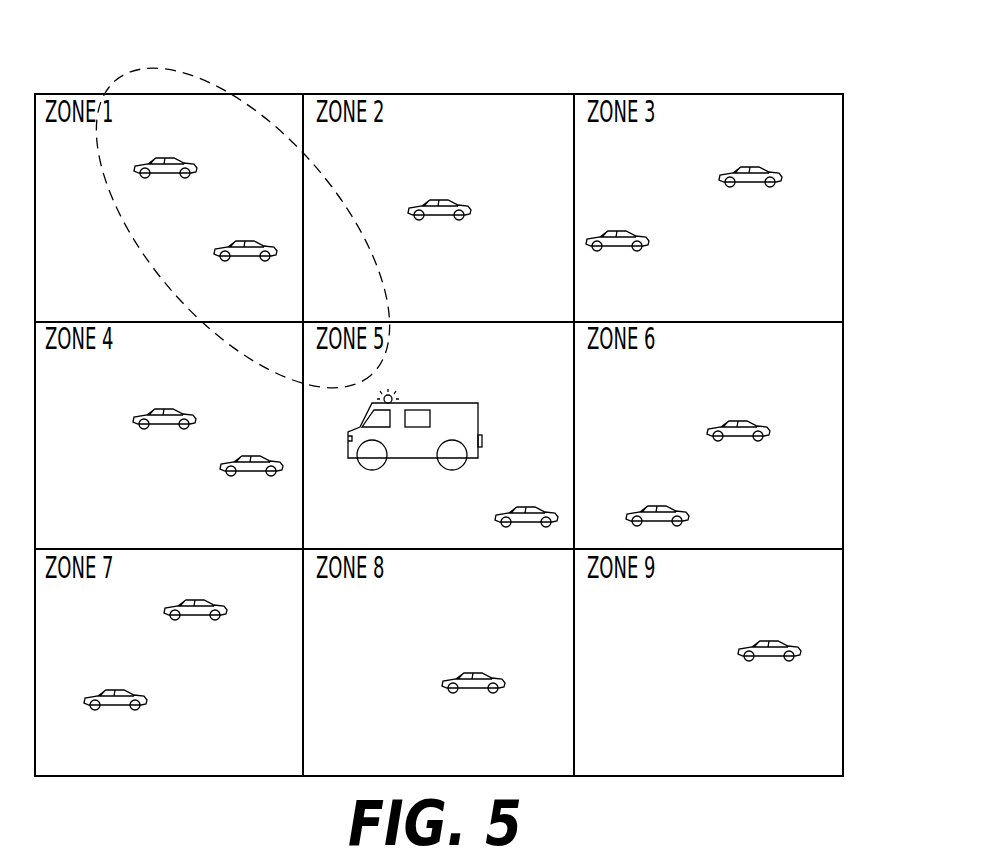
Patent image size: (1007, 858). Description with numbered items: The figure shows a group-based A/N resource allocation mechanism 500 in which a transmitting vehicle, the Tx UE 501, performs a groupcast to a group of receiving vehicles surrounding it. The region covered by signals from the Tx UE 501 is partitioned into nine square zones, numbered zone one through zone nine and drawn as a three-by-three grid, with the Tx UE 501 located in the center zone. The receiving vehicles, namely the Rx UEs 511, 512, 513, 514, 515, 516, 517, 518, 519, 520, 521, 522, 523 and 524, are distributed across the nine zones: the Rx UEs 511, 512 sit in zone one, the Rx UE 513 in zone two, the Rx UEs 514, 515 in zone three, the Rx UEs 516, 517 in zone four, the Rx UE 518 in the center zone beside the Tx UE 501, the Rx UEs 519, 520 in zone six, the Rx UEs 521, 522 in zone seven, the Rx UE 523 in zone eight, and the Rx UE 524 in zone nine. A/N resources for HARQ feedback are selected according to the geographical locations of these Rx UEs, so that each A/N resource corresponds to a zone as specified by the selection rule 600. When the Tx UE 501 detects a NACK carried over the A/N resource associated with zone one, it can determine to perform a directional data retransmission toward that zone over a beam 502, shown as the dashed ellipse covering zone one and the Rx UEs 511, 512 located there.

The group-based A/N resource allocation mechanism 500 is at (737, 56).
The Tx UE 501 is at (438, 403).
The beam 502 is at (219, 80).
The Rx UE 511 is at (165, 157).
The Rx UE 512 is at (245, 240).
The Rx UE 513 is at (439, 199).
The Rx UE 514 is at (617, 230).
The Rx UE 515 is at (750, 166).
The Rx UE 516 is at (164, 408).
The Rx UE 517 is at (251, 455).
The Rx UE 518 is at (526, 506).
The Rx UE 519 is at (657, 505).
The Rx UE 520 is at (738, 420).
The Rx UE 521 is at (115, 689).
The Rx UE 522 is at (205, 620).
The Rx UE 523 is at (473, 672).
The Rx UE 524 is at (769, 640).
The selection rule 600 is at (798, 857).